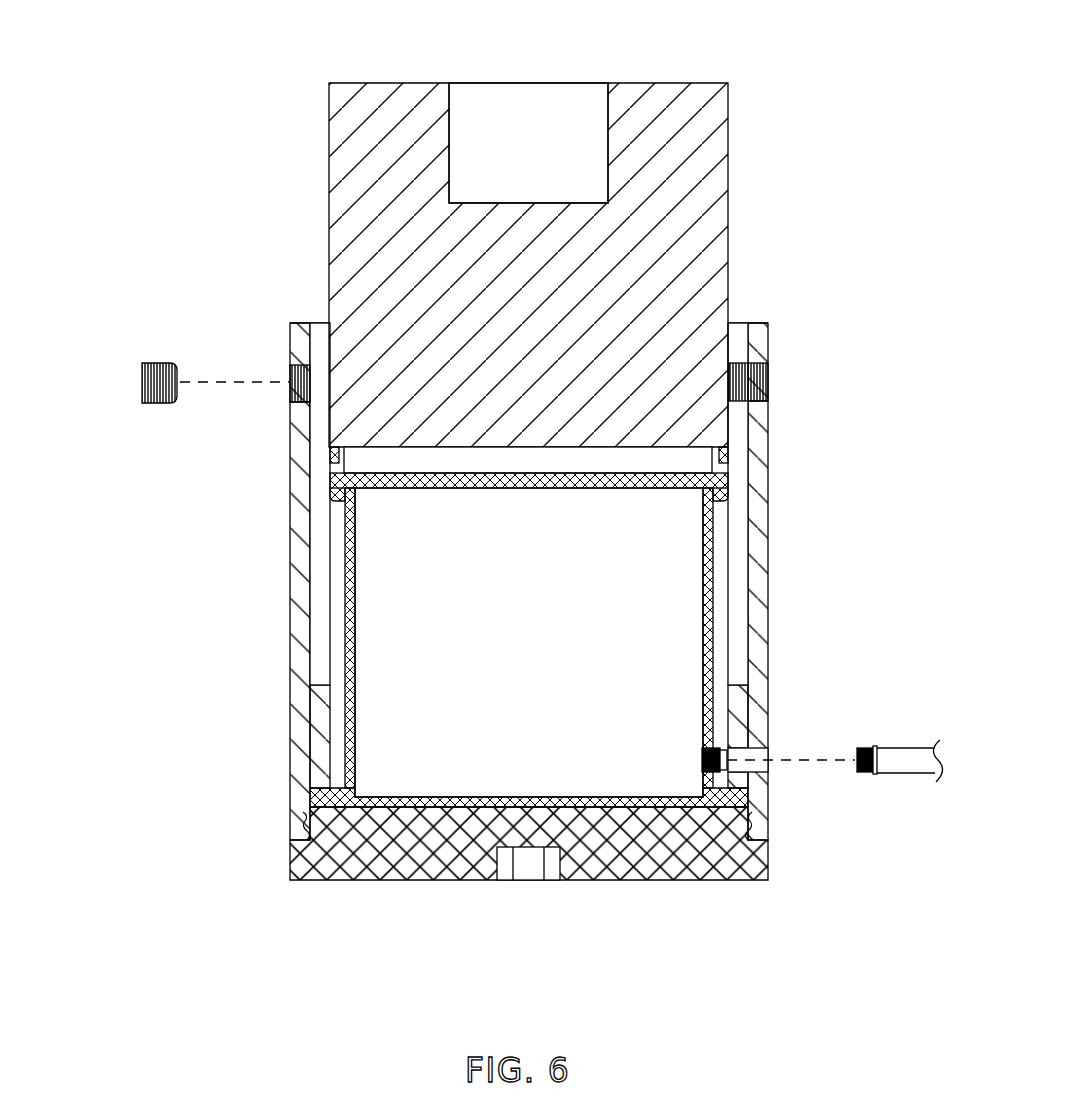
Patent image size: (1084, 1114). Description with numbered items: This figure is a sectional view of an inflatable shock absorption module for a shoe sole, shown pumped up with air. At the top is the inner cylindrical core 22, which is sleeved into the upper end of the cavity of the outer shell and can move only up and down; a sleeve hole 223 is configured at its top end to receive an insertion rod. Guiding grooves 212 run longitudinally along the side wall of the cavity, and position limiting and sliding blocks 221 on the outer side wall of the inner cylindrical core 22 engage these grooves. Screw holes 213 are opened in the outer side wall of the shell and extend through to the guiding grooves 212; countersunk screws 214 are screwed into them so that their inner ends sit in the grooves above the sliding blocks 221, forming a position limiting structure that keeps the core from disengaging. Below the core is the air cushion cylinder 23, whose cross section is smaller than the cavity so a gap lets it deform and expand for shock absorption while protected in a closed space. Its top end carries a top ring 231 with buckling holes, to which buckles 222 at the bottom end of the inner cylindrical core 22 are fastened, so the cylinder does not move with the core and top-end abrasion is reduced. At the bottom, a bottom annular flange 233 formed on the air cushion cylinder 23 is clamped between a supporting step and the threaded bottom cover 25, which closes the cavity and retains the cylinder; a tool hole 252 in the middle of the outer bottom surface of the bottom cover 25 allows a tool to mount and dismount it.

The inner cylindrical core 22 is at (728, 182).
The sleeve hole 223 is at (530, 120).
The top ring 231 is at (633, 467).
The countersunk screw 214 is at (157, 363).
The screw hole 213 is at (293, 372).
The position limiting and sliding block 221 is at (317, 433).
The buckle 222 is at (330, 470).
The guiding groove 212 is at (318, 592).
The air cushion cylinder 23 is at (347, 712).
The bottom annular flange 233 is at (327, 802).
The bottom cover 25 is at (417, 868).
The tool hole 252 is at (532, 870).